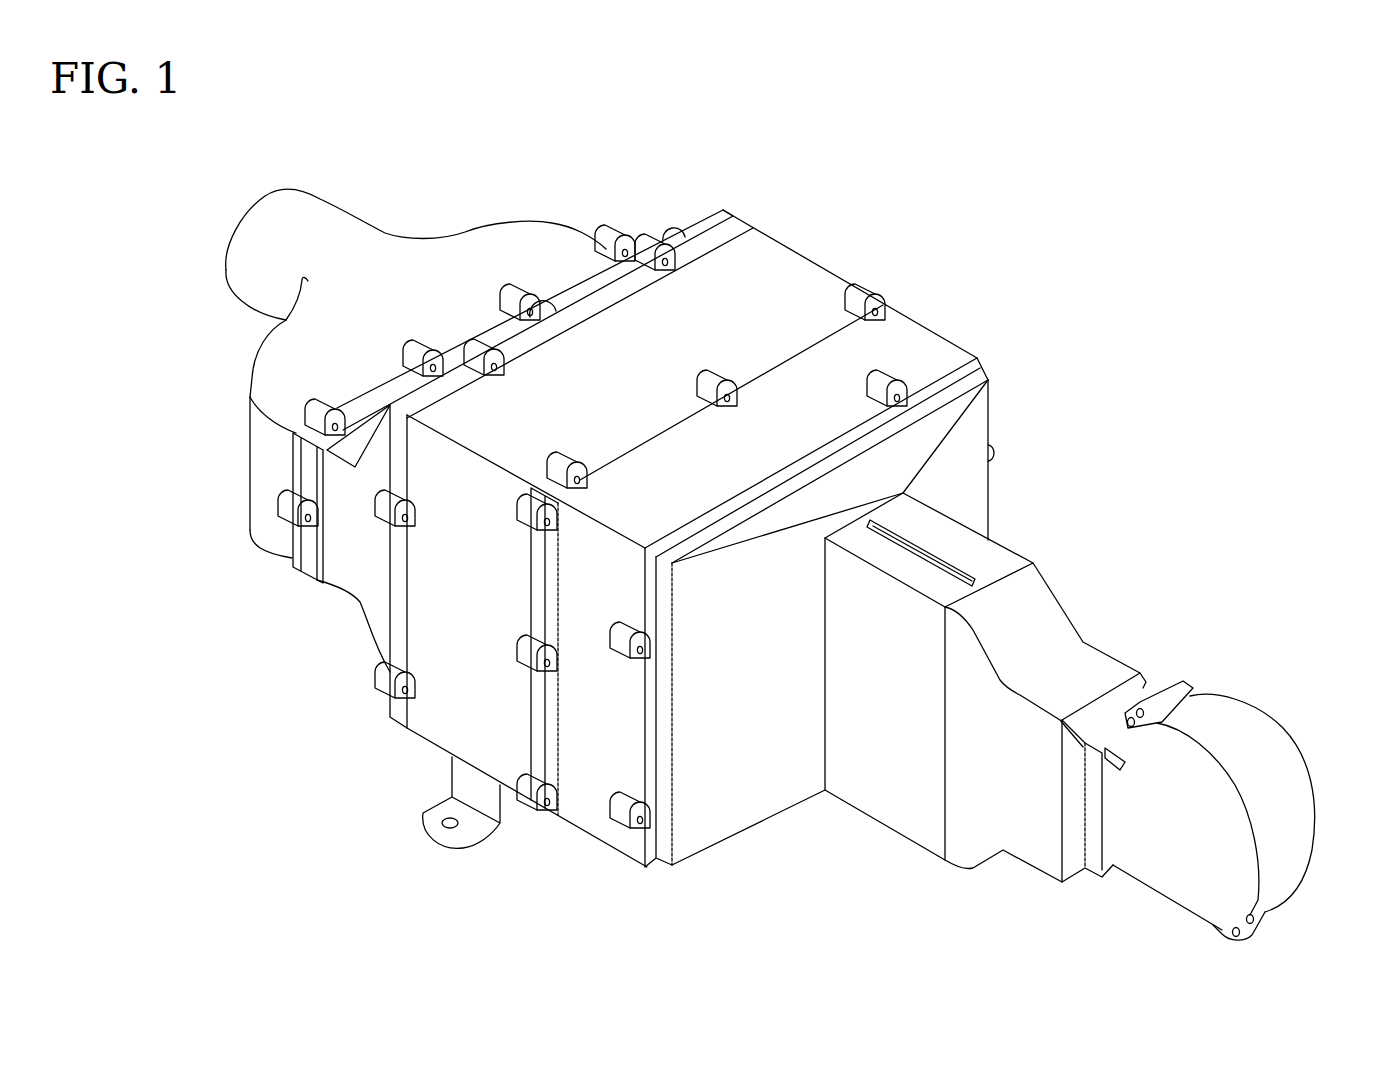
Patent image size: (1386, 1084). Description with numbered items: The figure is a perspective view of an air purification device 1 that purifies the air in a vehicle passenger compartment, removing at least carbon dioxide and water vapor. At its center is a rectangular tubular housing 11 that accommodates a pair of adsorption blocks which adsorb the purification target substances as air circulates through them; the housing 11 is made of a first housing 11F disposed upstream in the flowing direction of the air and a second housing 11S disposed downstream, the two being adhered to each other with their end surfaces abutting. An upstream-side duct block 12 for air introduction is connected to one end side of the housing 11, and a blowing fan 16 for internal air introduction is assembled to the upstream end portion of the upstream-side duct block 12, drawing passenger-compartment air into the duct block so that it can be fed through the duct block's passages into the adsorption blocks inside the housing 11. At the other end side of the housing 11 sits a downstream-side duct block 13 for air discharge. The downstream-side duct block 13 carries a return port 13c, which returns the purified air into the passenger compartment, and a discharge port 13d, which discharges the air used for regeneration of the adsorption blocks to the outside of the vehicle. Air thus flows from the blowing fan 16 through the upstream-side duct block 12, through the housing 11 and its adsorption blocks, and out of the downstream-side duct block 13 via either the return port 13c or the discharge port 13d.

The air purification device 1 is at (1000, 243).
The housing 11 is at (698, 527).
The second housing 11S is at (793, 268).
The first housing 11F is at (935, 350).
The upstream-side duct block 12 is at (1012, 540).
The downstream-side duct block 13 is at (553, 228).
The return port 13c is at (250, 370).
The discharge port 13d is at (232, 240).
The blowing fan 16 is at (1282, 760).